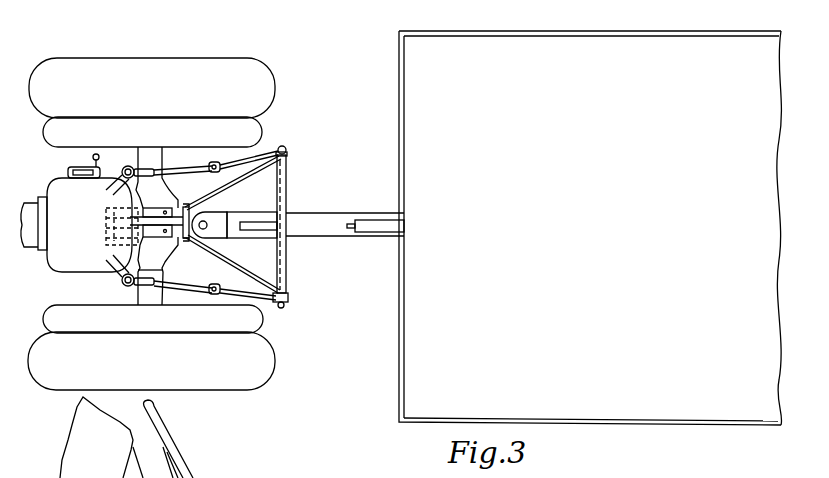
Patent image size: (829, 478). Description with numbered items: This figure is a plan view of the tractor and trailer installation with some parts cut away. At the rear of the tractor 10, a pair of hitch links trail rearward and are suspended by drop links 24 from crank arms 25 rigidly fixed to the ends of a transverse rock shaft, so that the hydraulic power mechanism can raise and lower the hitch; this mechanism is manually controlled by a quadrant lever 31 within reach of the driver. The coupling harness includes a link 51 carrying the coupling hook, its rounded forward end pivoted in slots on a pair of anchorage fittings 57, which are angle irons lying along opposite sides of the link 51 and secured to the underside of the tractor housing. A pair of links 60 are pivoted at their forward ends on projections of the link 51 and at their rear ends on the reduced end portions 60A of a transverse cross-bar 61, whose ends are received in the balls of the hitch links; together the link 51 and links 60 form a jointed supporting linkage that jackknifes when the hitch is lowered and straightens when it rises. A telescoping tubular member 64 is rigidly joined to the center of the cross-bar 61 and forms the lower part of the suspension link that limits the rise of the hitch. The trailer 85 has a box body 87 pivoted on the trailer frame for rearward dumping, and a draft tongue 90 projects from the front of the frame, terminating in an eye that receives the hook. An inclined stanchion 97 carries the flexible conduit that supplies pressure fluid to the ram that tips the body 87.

The tractor 10 is at (164, 56).
The drop links 24 is at (167, 168).
The crank arms 25 is at (119, 177).
The quadrant lever 31 is at (93, 160).
The link 51 is at (158, 237).
The anchorage fittings 57 is at (168, 208).
The links 60 is at (243, 180).
The reduced end portions 60A is at (283, 306).
The cross-bar 61 is at (288, 186).
The telescoping tubular member 64 is at (246, 221).
The trailer 85 is at (394, 392).
The box body 87 is at (648, 425).
The draft tongue 90 is at (337, 243).
The inclined stanchion 97 is at (378, 221).